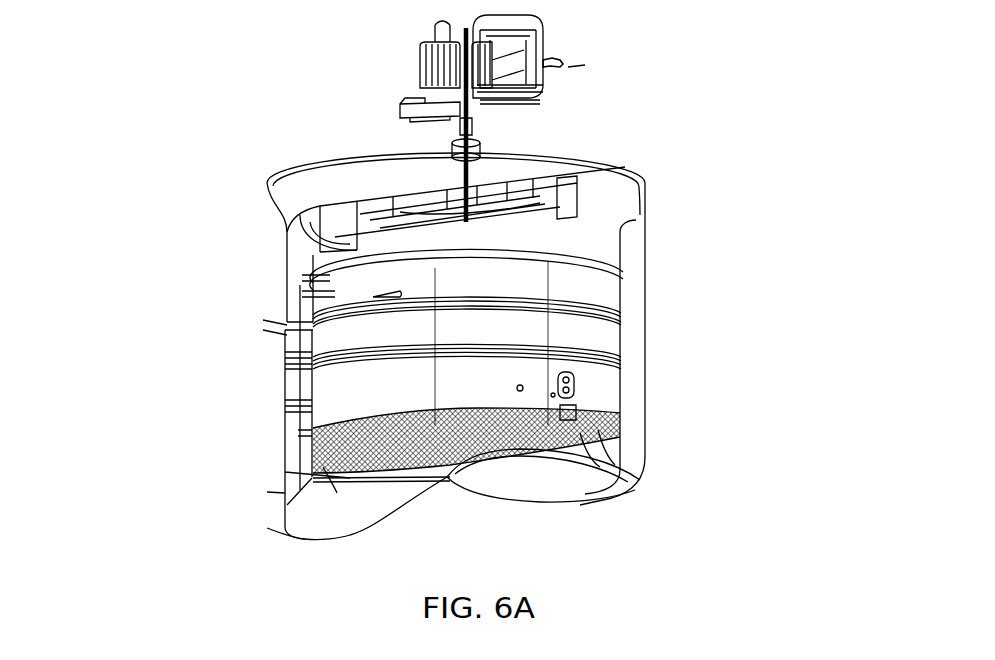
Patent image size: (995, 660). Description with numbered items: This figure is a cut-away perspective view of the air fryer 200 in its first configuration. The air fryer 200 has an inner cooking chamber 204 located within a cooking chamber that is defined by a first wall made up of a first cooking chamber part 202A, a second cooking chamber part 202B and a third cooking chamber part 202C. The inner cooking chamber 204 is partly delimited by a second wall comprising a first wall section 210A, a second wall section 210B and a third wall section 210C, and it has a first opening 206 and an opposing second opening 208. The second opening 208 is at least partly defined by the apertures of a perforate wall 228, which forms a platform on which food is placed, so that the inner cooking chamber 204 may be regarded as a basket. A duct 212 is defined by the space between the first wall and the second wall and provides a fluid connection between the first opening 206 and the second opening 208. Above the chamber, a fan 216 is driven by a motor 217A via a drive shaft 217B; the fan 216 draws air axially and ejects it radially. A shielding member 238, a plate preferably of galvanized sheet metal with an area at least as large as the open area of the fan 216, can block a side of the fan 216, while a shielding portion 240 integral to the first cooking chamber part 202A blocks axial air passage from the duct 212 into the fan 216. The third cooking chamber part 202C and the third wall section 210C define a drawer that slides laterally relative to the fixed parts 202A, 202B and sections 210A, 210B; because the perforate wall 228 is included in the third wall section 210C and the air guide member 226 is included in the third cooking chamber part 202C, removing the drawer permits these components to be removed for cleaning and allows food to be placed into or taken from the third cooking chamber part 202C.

The air fryer 200 is at (126, 60).
The motor 217A is at (450, 77).
The drive shaft 217B is at (462, 176).
The shielding portion 240 is at (373, 185).
The fan 216 is at (522, 203).
The first cooking chamber part 202A is at (635, 248).
The second wall section 210B is at (318, 305).
The first wall section 210A is at (300, 292).
The first opening 206 is at (500, 248).
The shielding member 238 is at (460, 270).
The second cooking chamber part 202B is at (272, 306).
The inner cooking chamber 204 is at (585, 345).
The third cooking chamber part 202C is at (277, 390).
The duct 212 is at (633, 400).
The third wall section 210C is at (307, 443).
The perforate wall 228 is at (341, 460).
The second opening 208 is at (557, 440).
The air guide member 226 is at (503, 483).